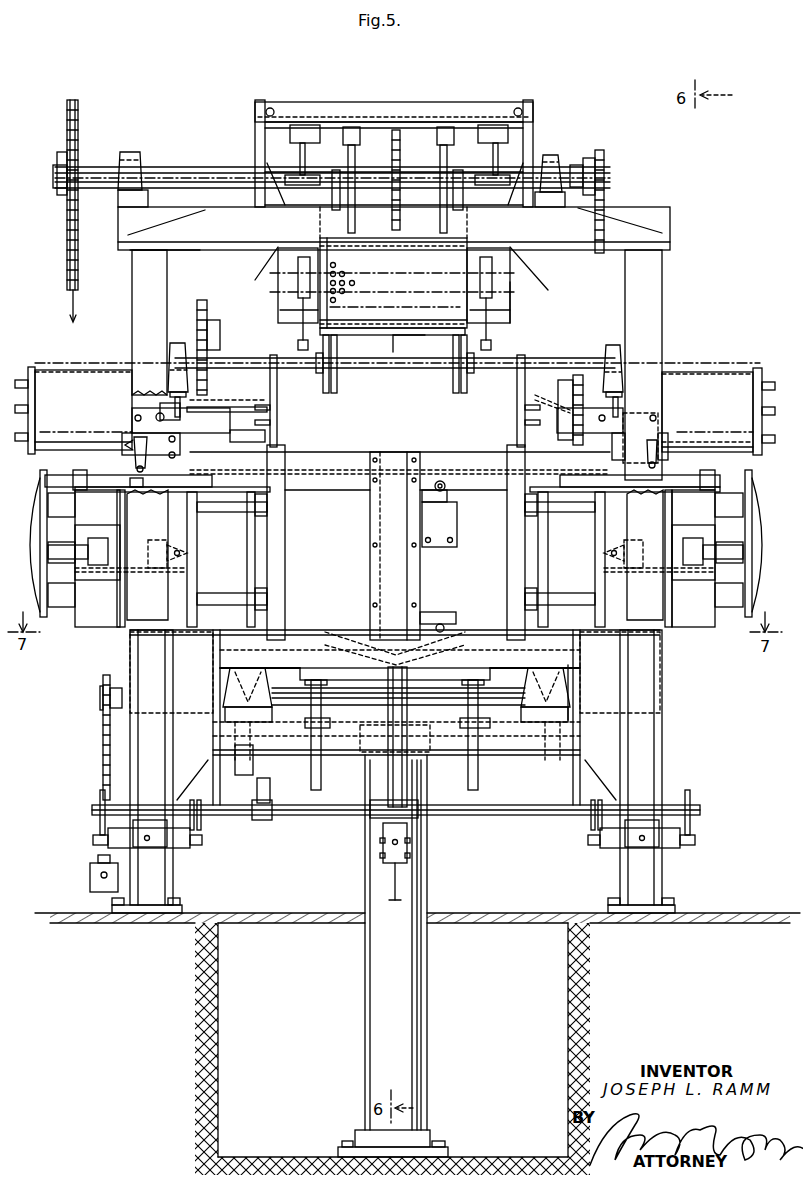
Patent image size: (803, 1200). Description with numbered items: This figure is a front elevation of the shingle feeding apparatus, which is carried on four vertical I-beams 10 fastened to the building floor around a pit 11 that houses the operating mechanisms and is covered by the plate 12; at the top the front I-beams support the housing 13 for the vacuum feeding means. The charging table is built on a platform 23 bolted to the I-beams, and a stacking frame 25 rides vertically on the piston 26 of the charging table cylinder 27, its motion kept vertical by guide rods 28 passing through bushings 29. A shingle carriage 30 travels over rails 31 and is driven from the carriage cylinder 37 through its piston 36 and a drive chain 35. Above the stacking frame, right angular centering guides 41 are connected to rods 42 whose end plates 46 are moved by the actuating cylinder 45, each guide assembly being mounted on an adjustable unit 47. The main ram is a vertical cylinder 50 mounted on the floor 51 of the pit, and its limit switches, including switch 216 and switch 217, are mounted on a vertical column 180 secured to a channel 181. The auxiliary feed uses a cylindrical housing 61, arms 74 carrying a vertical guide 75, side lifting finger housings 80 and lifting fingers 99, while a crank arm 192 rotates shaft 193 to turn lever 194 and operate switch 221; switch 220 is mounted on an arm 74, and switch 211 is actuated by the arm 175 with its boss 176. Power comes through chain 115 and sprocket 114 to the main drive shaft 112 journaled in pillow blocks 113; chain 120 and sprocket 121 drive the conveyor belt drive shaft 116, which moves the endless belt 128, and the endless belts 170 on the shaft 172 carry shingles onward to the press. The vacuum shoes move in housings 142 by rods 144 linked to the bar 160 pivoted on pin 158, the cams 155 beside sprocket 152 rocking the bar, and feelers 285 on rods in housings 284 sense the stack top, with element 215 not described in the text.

The vertical I-beams 10 is at (132, 288).
The pit 11 is at (502, 1042).
The plate 12 is at (506, 912).
The housing 13 is at (620, 225).
The platform 23 is at (396, 741).
The stacking frame 25 is at (451, 679).
The piston 26 is at (417, 720).
The charging table cylinder 27 is at (408, 800).
The guide rods 28 is at (320, 782).
The bushings 29 is at (322, 722).
The shingle carriage 30 is at (306, 634).
The rails 31 is at (268, 690).
The drive chain 35 is at (103, 750).
The piston 36 is at (100, 878).
The carriage cylinder 37 is at (90, 865).
The centering guides 41 is at (278, 560).
The rods 42 is at (230, 512).
The actuating cylinder 45 is at (140, 548).
The end plates 46 is at (40, 488).
The unit 47 is at (118, 506).
The vertical cylinder 50 is at (427, 985).
The floor 51 is at (480, 1157).
The cylindrical housing 61 is at (194, 566).
The arms 74 is at (250, 405).
The vertical guide 75 is at (278, 440).
The cylindrical housing 80 is at (85, 372).
The lifting finger 99 is at (276, 409).
The main drive shaft 112 is at (175, 167).
The pillow blocks 113 is at (130, 152).
The sprocket 114 is at (78, 124).
The chain 115 is at (77, 270).
The conveyor belt drive shaft 116 is at (505, 300).
The chain 120 is at (593, 200).
The sprocket 121 is at (604, 160).
The endless belt 128 is at (350, 334).
The housing 142 is at (505, 268).
The rod 144 is at (304, 162).
The sprocket 152 is at (398, 150).
The cam 155 is at (354, 160).
The pivot pin 158 is at (460, 120).
The bar 160 is at (391, 112).
The endless belts 170 is at (337, 385).
The shaft 172 is at (395, 368).
The arm 175 is at (60, 478).
The switch operating boss 176 is at (180, 343).
The vertical column 180 is at (370, 509).
The channel 181 is at (356, 452).
The crank arm 192 is at (200, 828).
The shaft 193 is at (300, 811).
The lever 194 is at (268, 797).
The switch 211 is at (130, 455).
The frame member 215 is at (555, 706).
The switch 216 is at (457, 613).
The switch 217 is at (455, 525).
The switch 220 is at (255, 432).
The switch 221 is at (245, 777).
The housings 284 is at (328, 264).
The feeler 285 is at (298, 343).